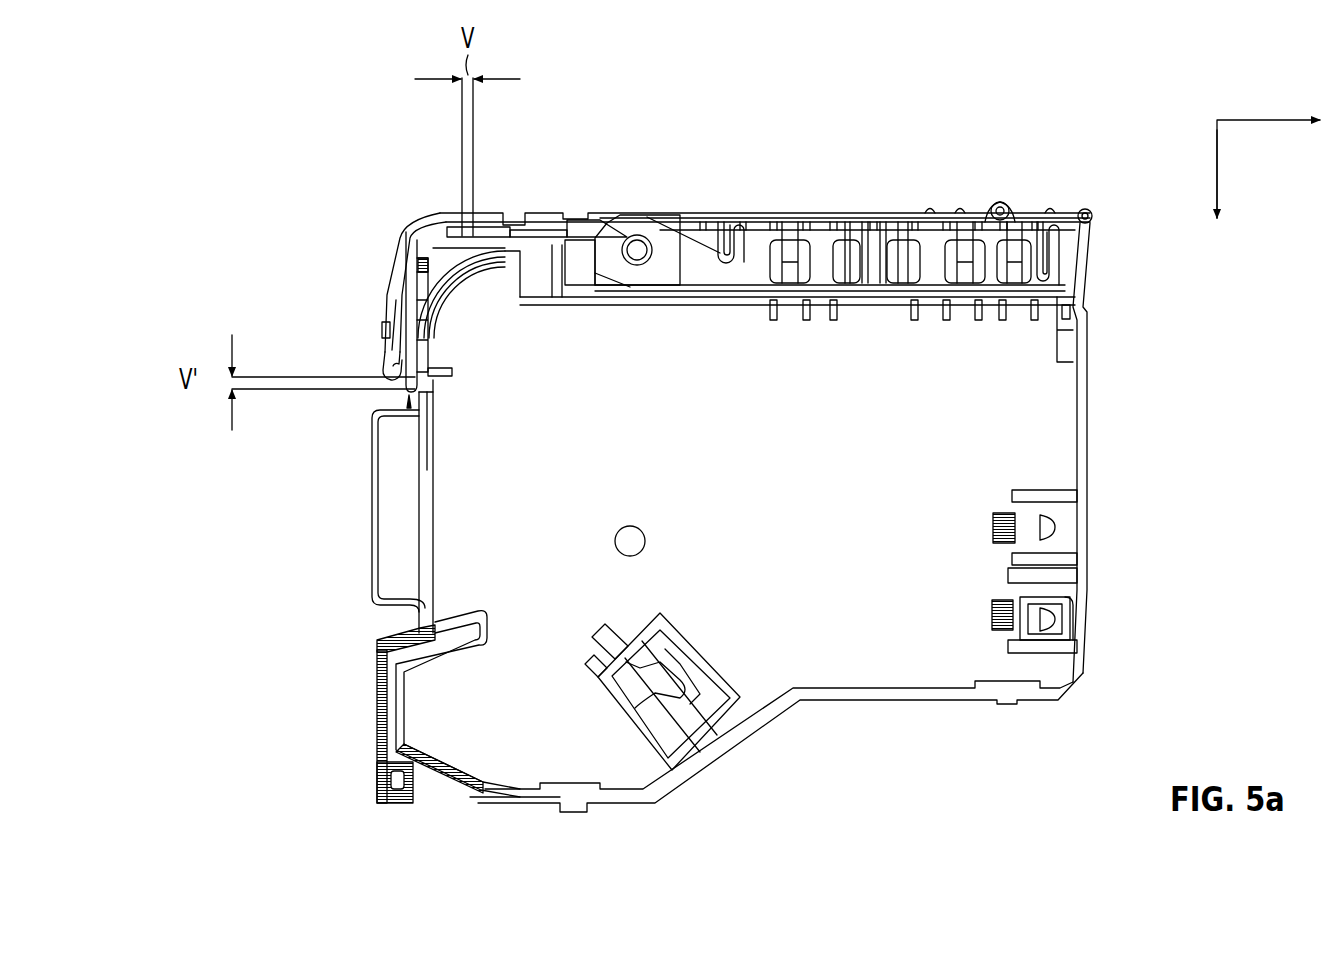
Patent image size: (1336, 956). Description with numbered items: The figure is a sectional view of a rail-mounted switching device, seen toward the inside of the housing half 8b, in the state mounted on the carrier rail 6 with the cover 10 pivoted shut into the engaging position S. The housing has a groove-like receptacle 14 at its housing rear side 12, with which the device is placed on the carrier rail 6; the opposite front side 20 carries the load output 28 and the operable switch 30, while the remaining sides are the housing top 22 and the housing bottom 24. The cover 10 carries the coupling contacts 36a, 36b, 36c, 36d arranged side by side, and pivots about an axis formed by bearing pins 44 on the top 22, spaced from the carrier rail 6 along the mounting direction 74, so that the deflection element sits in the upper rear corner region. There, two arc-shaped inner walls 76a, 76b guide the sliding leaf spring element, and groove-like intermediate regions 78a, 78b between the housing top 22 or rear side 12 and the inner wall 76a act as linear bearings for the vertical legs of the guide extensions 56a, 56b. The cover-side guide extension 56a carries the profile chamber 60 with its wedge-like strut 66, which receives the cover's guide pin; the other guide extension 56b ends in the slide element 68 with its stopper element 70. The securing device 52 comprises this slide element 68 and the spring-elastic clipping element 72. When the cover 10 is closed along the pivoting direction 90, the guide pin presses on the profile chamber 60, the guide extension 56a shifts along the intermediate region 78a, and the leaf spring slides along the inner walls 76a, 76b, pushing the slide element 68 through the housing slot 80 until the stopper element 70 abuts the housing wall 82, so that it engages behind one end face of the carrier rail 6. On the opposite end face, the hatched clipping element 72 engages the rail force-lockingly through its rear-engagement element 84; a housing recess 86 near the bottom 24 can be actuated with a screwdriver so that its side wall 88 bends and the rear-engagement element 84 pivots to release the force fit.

The carrier rail 6 is at (372, 465).
The housing half 8b is at (1020, 417).
The cover 10 is at (888, 215).
The housing rear side 12 is at (383, 277).
The receptacle 14 is at (407, 512).
The front side 20 is at (1090, 480).
The housing top 22 is at (770, 212).
The housing bottom 24 is at (507, 805).
The load output 28 is at (723, 753).
The operable switch 30 is at (1068, 610).
The coupling contact 36a is at (1018, 268).
The coupling contact 36b is at (958, 268).
The coupling contact 36c is at (900, 268).
The coupling contact 36d is at (787, 268).
The bearing pin 44 is at (637, 250).
The securing device 52 is at (205, 515).
The guide extension 56a is at (497, 250).
The guide extension 56b is at (412, 317).
The profile chamber 60 is at (583, 282).
The strut 66 is at (543, 265).
The slide element 68 is at (383, 353).
The stopper element 70 is at (428, 380).
The clipping element 72 is at (275, 735).
The mounting direction 74 is at (1282, 120).
The inner wall 76a is at (425, 232).
The inner wall 76b is at (458, 287).
The intermediate region 78a is at (437, 262).
The intermediate region 78b is at (400, 250).
The housing slot 80 is at (417, 410).
The housing wall 82 is at (433, 384).
The rear-engagement element 84 is at (397, 633).
The housing recess 86 is at (410, 781).
The side wall 88 is at (377, 717).
The pivoting direction 90 is at (1217, 170).
The engaging position S is at (857, 190).